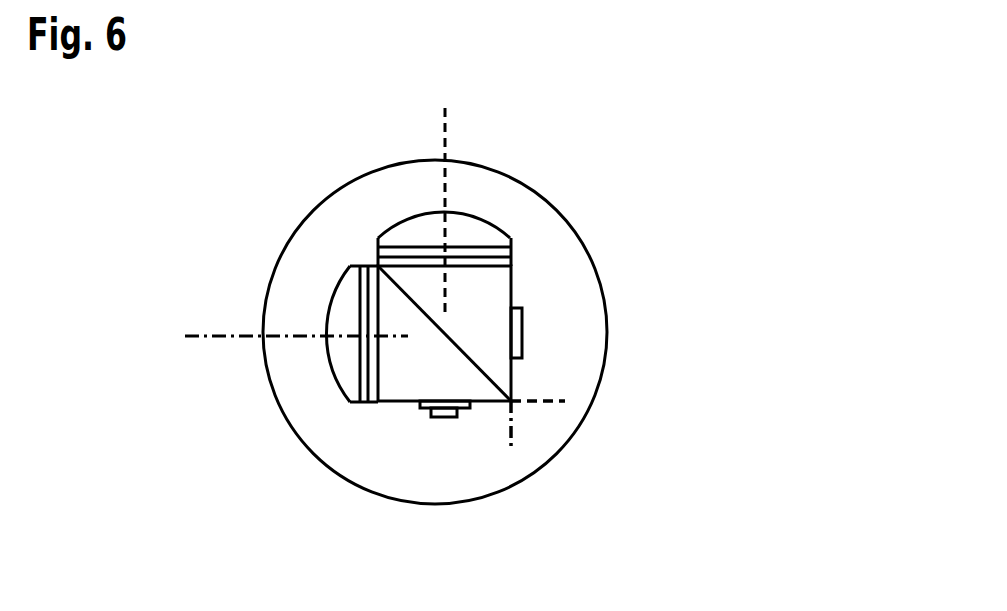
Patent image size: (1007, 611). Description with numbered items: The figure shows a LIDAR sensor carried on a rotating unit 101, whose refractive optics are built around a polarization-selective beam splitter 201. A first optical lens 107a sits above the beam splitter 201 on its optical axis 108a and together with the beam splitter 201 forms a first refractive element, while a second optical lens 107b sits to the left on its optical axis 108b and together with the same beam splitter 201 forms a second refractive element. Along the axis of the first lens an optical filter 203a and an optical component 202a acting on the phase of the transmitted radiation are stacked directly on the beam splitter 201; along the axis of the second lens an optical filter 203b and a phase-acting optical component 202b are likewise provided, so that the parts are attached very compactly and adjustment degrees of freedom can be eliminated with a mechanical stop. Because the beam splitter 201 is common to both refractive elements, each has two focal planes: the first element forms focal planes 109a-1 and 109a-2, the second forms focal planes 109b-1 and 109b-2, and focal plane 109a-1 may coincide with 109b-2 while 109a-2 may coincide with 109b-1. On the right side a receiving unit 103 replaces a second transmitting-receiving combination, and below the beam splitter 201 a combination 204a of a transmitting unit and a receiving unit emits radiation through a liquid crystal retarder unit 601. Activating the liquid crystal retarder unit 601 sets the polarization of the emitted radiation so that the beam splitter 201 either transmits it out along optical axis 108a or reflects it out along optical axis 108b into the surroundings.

The rotating unit 101 is at (290, 430).
The receiving unit 103 is at (522, 337).
The first optical lens 107a is at (482, 220).
The second optical lens 107b is at (332, 370).
The optical axis of first optical lens 108a is at (442, 123).
The optical axis of second optical lens 108b is at (217, 336).
The first focal plane of first refractive element 109a-1 is at (545, 402).
The second focal plane of first refractive element 109a-2 is at (594, 480).
The first focal plane of second refractive element 109b-1 is at (511, 433).
The second focal plane of second refractive element 109b-2 is at (664, 424).
The beam splitter 201 is at (490, 288).
The optical component acting on phase 202a is at (512, 258).
The optical component acting on phase 202b is at (378, 404).
The optical filter 203a is at (377, 255).
The optical filter 203b is at (367, 265).
The combination of transmitting unit and receiving unit 204a is at (444, 417).
The liquid crystal retarder unit 601 is at (420, 406).